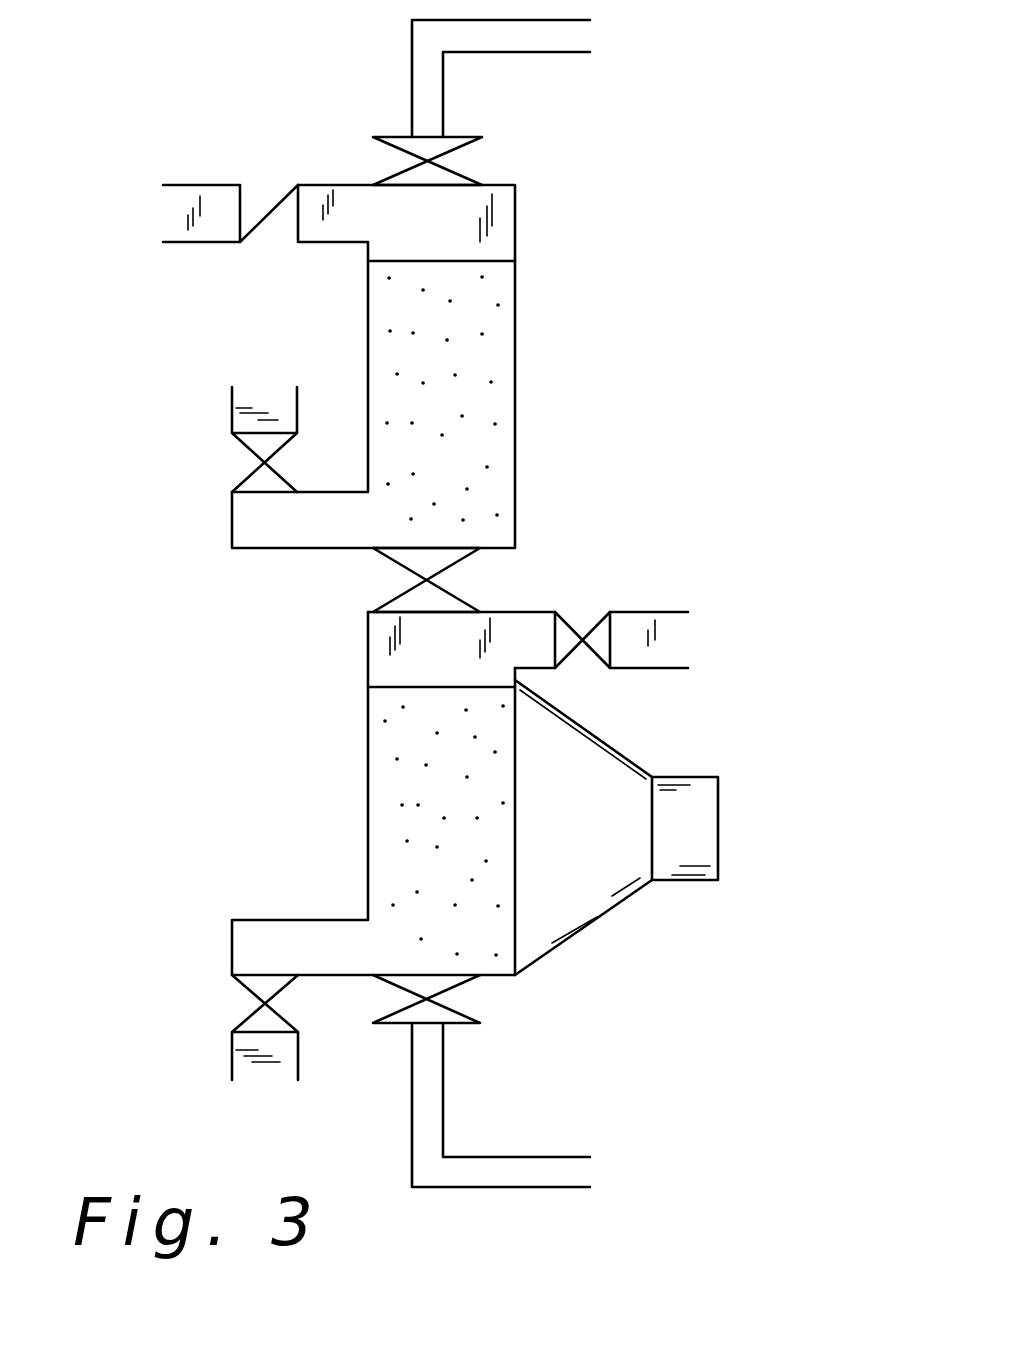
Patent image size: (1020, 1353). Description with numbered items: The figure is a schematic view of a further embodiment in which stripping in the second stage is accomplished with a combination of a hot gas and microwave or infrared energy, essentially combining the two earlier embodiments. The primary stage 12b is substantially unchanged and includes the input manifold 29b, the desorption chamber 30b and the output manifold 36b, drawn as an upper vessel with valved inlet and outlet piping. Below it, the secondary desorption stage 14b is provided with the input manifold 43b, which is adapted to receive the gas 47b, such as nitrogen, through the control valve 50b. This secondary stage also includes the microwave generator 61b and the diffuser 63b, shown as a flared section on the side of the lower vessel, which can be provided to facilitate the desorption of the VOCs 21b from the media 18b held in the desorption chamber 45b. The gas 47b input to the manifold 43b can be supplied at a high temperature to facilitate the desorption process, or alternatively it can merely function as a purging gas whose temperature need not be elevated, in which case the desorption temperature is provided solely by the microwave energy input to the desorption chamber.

The primary stage 12b is at (425, 487).
The secondary desorption stage 14b is at (538, 831).
The media 18b is at (482, 355).
The VOCs 21b is at (597, 35).
The input manifold 29b is at (495, 213).
The desorption chamber 30b is at (493, 457).
The output manifold 36b is at (262, 532).
The input manifold 43b is at (378, 652).
The desorption chamber 45b is at (383, 858).
The gas 47b is at (663, 643).
The control valve 50b is at (583, 648).
The microwave generator 61b is at (702, 842).
The diffuser 63b is at (572, 908).